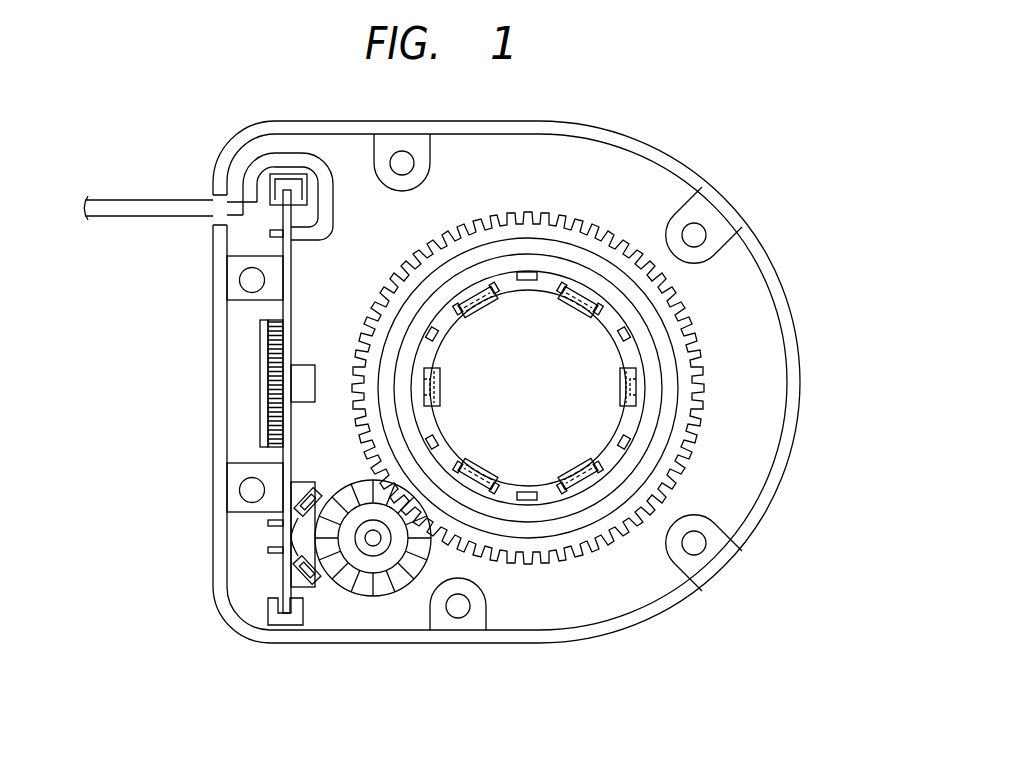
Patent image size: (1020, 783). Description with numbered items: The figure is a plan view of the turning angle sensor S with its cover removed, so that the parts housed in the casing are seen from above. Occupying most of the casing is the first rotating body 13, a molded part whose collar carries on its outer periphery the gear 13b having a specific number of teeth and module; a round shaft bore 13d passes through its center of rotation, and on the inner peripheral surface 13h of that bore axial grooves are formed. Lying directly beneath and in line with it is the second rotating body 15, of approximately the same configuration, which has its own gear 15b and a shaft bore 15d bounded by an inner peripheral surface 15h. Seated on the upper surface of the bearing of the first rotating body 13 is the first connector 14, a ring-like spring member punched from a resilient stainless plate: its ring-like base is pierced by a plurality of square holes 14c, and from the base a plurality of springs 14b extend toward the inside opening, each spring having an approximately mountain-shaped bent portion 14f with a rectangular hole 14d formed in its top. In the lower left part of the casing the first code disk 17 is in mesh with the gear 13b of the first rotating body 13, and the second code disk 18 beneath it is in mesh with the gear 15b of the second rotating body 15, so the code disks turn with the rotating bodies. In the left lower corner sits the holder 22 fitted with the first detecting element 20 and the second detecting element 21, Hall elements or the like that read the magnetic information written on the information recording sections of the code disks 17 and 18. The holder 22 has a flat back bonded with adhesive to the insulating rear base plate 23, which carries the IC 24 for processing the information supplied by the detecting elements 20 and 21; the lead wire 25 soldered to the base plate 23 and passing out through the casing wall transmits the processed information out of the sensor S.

The turning angle sensor S is at (246, 115).
The first rotating body 13 is at (528, 314).
The second rotating body 15 is at (561, 214).
The gear 13b is at (585, 337).
The gear 15b is at (626, 238).
The shaft bore 13d is at (656, 373).
The shaft bore 15d is at (590, 356).
The inner peripheral surface 13h is at (644, 398).
The inner peripheral surface 15h is at (600, 452).
The first connector 14 is at (500, 271).
The spring 14b is at (448, 333).
The square hole 14c is at (432, 327).
The rectangular hole 14d is at (481, 310).
The bent portion 14f is at (468, 452).
The first code disk 17 is at (373, 593).
The second code disk 18 is at (390, 597).
The first detecting element 20 is at (217, 534).
The second detecting element 21 is at (298, 498).
The holder 22 is at (298, 580).
The base plate 23 is at (288, 458).
The IC 24 is at (260, 346).
The lead wire 25 is at (167, 199).